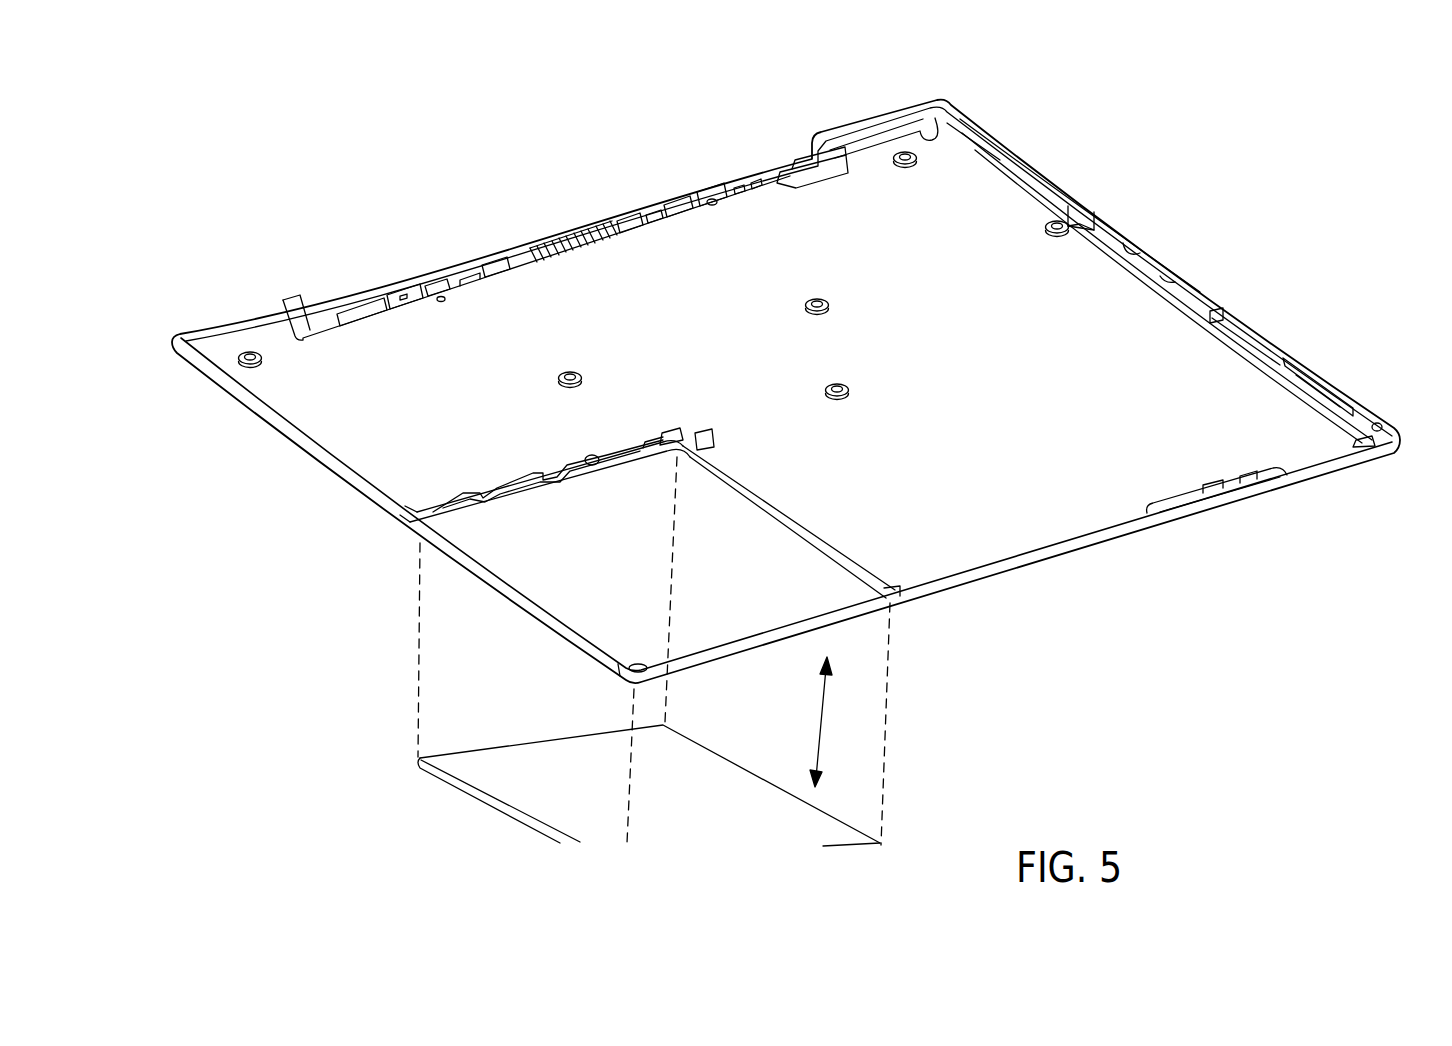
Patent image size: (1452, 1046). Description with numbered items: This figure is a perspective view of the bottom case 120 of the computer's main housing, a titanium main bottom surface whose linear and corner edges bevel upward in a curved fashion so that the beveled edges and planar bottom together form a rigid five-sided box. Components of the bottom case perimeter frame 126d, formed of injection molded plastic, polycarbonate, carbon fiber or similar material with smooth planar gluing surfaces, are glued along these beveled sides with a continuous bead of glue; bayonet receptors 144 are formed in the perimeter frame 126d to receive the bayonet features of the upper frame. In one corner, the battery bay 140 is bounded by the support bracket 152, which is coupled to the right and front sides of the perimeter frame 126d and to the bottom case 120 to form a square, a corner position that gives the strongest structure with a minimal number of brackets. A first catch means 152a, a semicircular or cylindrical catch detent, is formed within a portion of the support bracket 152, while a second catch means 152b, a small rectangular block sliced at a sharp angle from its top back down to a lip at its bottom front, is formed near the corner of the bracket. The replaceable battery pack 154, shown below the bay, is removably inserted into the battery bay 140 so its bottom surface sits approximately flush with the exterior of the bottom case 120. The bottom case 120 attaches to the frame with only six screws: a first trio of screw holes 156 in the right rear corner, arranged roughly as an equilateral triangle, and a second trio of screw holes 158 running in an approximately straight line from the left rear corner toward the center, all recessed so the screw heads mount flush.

The bottom case 120 is at (1026, 400).
The bottom case perimeter frame 126d is at (1177, 274).
The battery bay 140 is at (626, 561).
The bayonet receptors 144 is at (1074, 210).
The support bracket 152 is at (678, 430).
The first catch means 152a is at (574, 454).
The second catch means 152b is at (720, 437).
The battery pack 154 is at (689, 799).
The first trio of screw holes 156 is at (820, 304).
The second trio of screw holes 158 is at (252, 352).